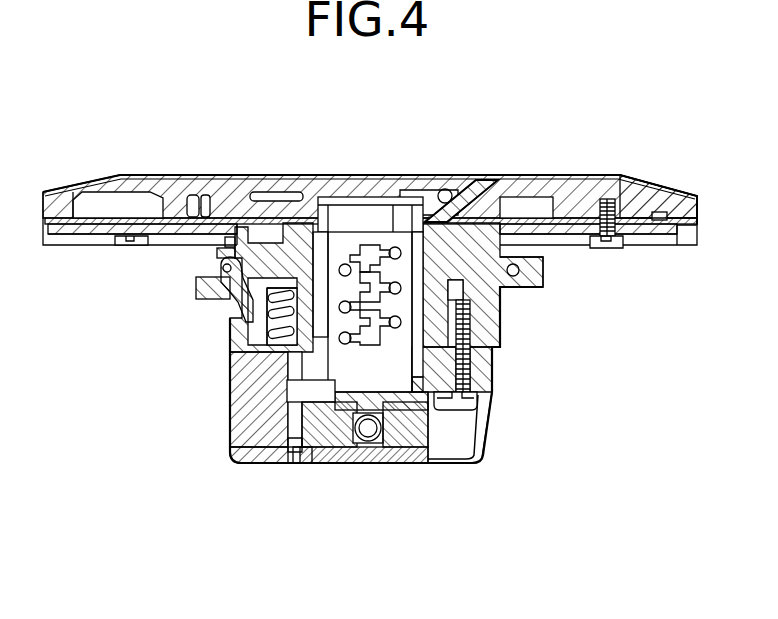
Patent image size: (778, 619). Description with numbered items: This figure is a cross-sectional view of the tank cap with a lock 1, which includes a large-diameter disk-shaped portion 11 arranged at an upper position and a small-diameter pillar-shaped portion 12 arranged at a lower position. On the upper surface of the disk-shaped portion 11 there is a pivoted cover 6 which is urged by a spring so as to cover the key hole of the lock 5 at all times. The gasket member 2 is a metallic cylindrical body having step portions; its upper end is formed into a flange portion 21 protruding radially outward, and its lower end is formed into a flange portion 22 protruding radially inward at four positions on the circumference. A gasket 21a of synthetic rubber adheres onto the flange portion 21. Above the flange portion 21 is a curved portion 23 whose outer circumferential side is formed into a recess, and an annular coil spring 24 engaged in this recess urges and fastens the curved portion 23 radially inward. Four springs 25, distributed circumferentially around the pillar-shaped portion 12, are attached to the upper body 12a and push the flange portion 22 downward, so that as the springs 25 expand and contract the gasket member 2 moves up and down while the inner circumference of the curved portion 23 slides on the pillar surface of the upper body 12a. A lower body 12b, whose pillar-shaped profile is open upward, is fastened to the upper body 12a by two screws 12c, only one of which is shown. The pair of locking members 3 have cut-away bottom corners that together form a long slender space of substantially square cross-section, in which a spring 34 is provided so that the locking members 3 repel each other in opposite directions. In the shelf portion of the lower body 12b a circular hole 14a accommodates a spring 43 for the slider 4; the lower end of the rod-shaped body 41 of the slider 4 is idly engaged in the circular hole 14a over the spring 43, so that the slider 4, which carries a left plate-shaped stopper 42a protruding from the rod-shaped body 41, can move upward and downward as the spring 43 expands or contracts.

The tank cap with a lock 1 is at (548, 165).
The disk-shaped portion 11 is at (642, 176).
The gasket member 2 is at (218, 307).
The locking member 3 is at (340, 458).
The slider 4 is at (266, 394).
The lock 5 is at (358, 210).
The cover 6 is at (407, 196).
The pillar-shaped portion 12 is at (496, 427).
The upper body 12a is at (505, 300).
The lower body 12b is at (240, 445).
The screw 12c is at (494, 372).
The circular hole 14a is at (288, 430).
The flange portion 21 is at (216, 270).
The gasket 21a is at (195, 290).
The flange portion 22 is at (245, 360).
The curved portion 23 is at (231, 240).
The annular coil spring 24 is at (220, 258).
The spring 25 is at (262, 330).
The spring 34 is at (380, 455).
The rod-shaped body 41 is at (294, 414).
The left plate-shaped stopper 42a is at (328, 458).
The spring 43 is at (298, 458).